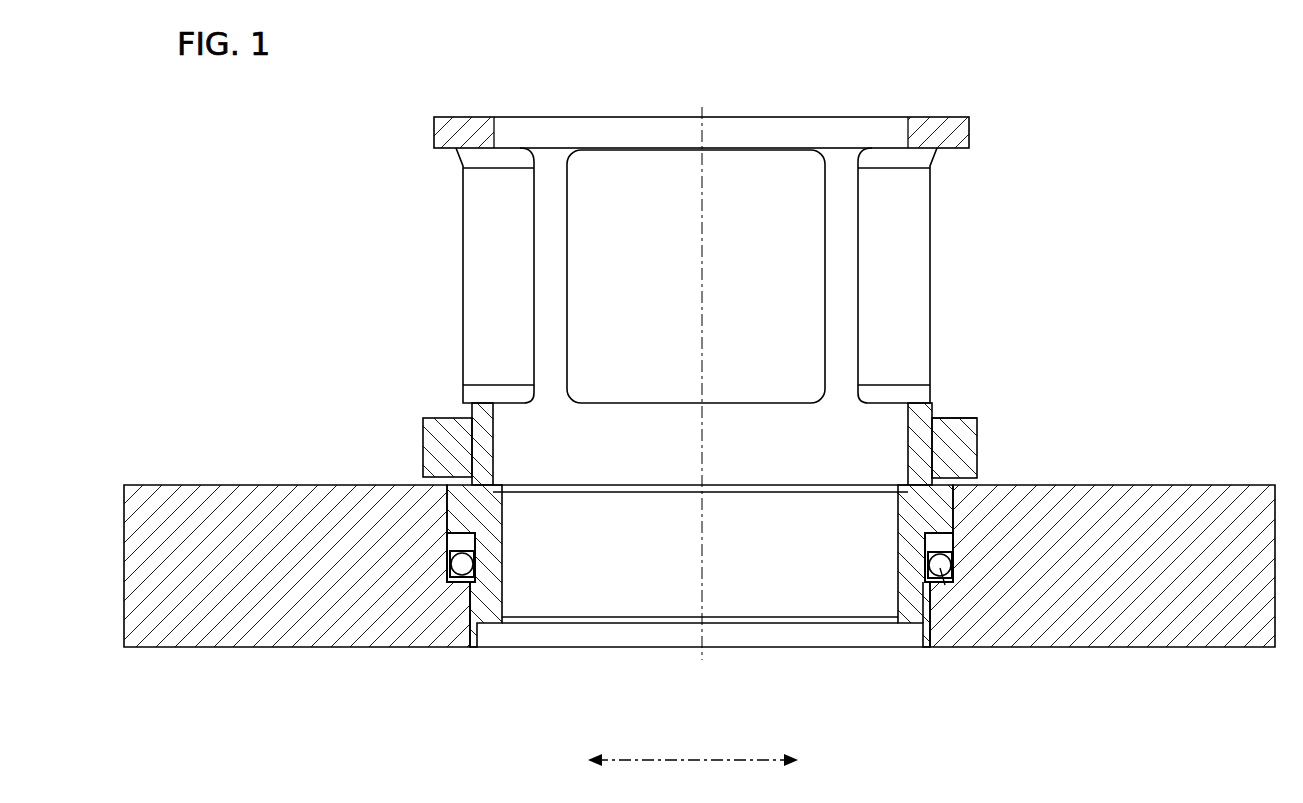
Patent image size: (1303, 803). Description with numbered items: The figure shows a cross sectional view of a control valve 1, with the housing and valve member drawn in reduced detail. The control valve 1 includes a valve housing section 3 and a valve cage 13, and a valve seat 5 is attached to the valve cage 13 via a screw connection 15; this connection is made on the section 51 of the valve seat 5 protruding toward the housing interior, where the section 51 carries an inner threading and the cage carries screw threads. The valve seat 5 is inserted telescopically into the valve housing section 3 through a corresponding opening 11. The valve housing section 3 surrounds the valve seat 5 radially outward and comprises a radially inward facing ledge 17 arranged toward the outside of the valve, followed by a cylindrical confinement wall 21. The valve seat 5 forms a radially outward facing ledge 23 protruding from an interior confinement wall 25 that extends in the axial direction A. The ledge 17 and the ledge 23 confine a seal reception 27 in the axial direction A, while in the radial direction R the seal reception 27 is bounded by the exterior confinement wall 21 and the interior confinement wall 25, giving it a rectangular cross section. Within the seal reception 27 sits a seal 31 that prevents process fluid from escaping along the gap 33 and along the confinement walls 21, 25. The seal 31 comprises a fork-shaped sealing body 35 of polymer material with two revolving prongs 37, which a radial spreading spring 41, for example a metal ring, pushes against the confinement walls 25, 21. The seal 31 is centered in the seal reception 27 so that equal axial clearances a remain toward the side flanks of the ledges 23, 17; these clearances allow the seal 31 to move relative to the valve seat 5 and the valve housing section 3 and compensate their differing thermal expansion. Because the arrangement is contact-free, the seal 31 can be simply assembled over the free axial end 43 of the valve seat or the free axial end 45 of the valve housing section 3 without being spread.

The control valve 1 is at (1031, 250).
The valve housing section 3 is at (268, 651).
The valve seat 5 is at (980, 457).
The opening 11 is at (478, 621).
The valve cage 13 is at (882, 116).
The screw connection 15 is at (473, 440).
The radially inward facing ledge 17 is at (465, 605).
The confinement wall 21 is at (450, 511).
The radially outward facing ledge 23 is at (935, 512).
The interior confinement wall 25 is at (935, 607).
The seal reception 27 is at (475, 623).
The seal 31 is at (920, 565).
The gap 33 is at (460, 590).
The sealing body 35 is at (945, 543).
The revolving prongs 37 is at (465, 562).
The radial spreading spring 41 is at (935, 588).
The free axial end of the valve seat 43 is at (930, 618).
The free axial end of the valve housing section 45 is at (958, 493).
The section of the valve seat 51 is at (958, 438).
The axial direction A is at (700, 167).
The axial clearance a is at (940, 568).
The radial direction R is at (742, 760).